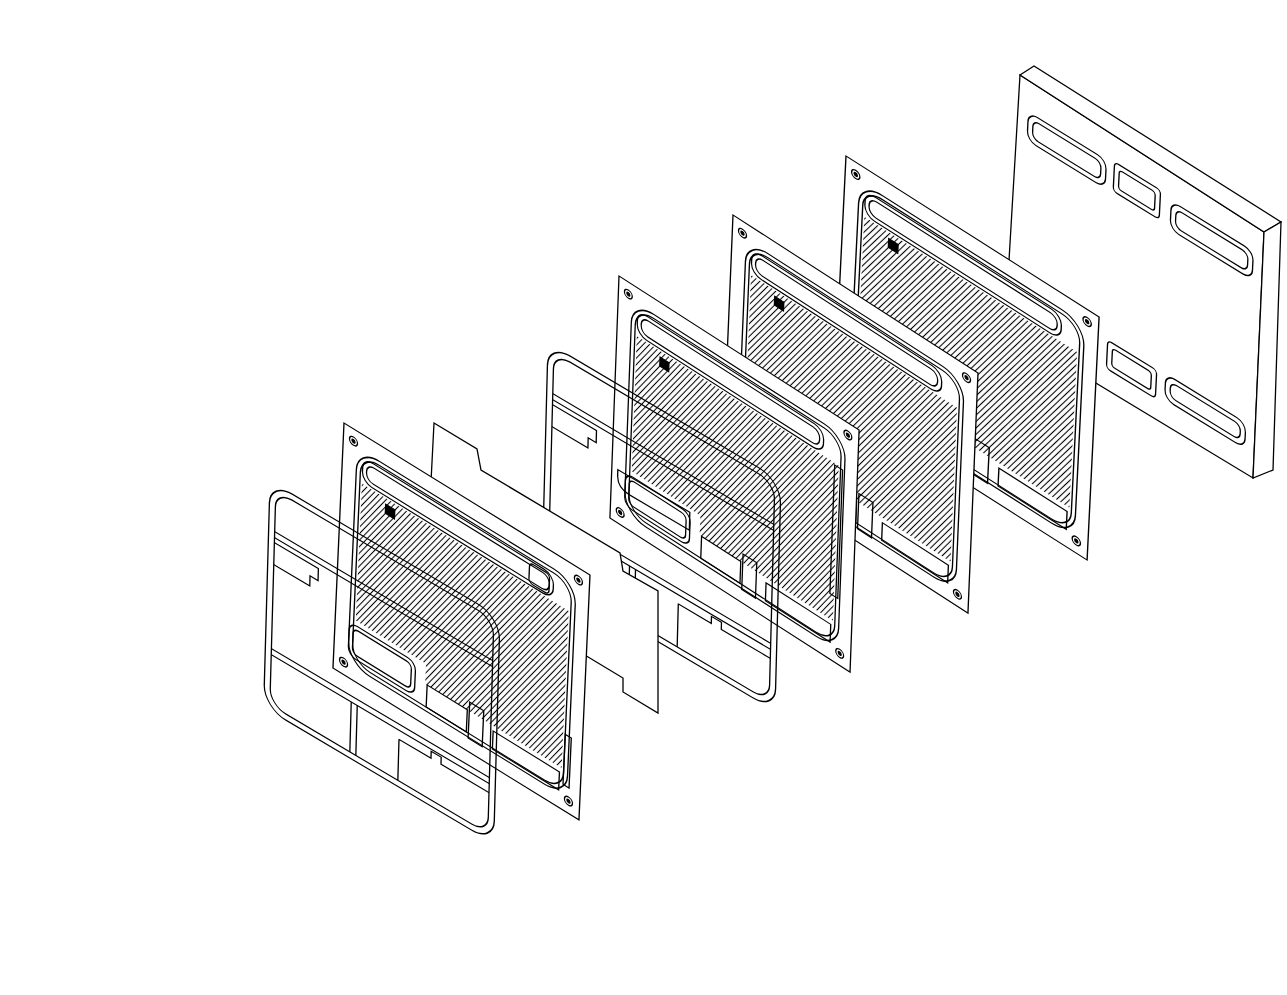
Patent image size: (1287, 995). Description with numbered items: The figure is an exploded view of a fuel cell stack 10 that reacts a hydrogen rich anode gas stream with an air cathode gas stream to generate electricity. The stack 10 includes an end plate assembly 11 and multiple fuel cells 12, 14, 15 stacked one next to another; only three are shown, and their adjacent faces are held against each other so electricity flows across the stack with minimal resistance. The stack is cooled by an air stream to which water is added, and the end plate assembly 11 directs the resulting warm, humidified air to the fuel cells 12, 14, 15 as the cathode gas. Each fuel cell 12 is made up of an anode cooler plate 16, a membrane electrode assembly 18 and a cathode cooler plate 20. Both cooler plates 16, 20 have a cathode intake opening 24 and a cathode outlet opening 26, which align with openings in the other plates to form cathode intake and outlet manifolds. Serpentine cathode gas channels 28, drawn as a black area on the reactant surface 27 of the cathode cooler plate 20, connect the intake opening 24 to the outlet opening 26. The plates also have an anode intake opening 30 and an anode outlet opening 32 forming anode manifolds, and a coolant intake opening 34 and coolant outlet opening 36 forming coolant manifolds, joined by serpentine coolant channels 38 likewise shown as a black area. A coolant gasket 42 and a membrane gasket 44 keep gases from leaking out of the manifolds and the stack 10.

The fuel cell stack 10 is at (726, 448).
The end plate assembly 11 is at (995, 152).
The fuel cell 12 is at (541, 478).
The fuel cell 14 is at (967, 622).
The fuel cell 15 is at (1094, 544).
The anode cooler plate 16 is at (343, 415).
The membrane electrode assembly 18 is at (456, 426).
The cathode cooler plate 20 is at (658, 295).
The cathode intake opening 24 is at (537, 582).
The cathode outlet opening 26 is at (368, 650).
The reactant surface 27 is at (843, 638).
The serpentine cathode gas channels 28 is at (847, 582).
The anode intake opening 30 is at (378, 470).
The anode outlet opening 32 is at (527, 755).
The coolant intake opening 34 is at (463, 526).
The coolant outlet opening 36 is at (455, 703).
The serpentine coolant channels 38 is at (583, 700).
The coolant gasket 42 is at (268, 478).
The membrane gasket 44 is at (548, 342).